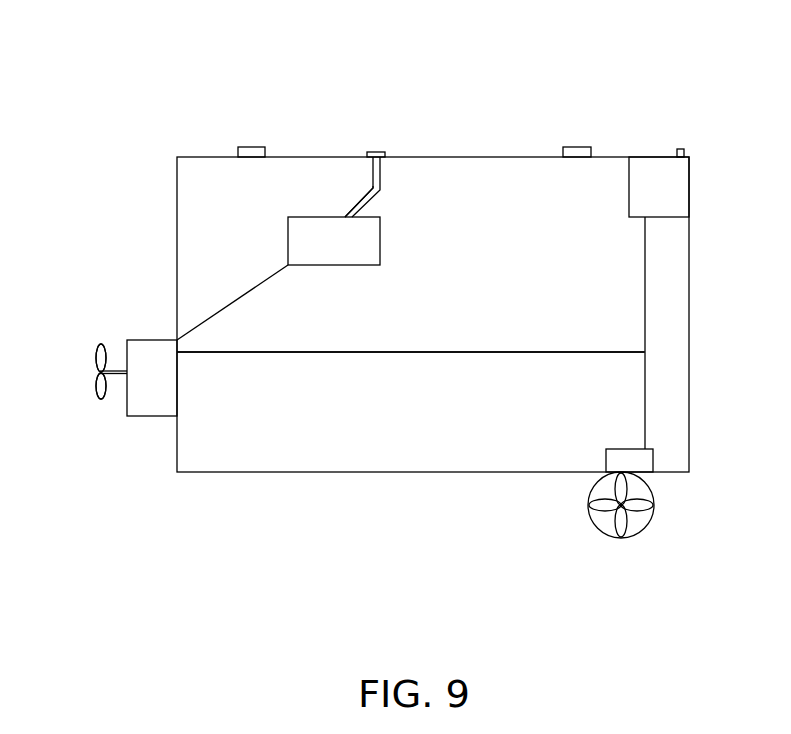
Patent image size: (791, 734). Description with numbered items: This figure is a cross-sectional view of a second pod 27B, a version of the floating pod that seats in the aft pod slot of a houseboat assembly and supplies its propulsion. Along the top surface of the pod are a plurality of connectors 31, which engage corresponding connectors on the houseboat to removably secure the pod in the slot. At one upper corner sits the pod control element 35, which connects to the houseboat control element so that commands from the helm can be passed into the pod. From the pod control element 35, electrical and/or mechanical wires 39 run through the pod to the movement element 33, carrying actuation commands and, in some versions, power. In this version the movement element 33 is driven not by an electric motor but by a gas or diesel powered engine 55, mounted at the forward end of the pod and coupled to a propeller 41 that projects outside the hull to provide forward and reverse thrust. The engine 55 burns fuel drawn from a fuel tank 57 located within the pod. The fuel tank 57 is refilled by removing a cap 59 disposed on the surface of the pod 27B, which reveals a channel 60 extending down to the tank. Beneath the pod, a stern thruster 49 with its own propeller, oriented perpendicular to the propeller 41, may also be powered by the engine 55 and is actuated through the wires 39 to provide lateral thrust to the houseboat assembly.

The second pod 27B is at (56, 94).
The connectors 31 is at (255, 147).
The movement element 33 is at (72, 343).
The pod control element 35 is at (666, 183).
The wires 39 is at (262, 352).
The propeller 41 is at (98, 396).
The stern thruster 49 is at (637, 519).
The engine 55 is at (146, 348).
The fuel tank 57 is at (367, 238).
The cap 59 is at (376, 150).
The channel 60 is at (363, 195).